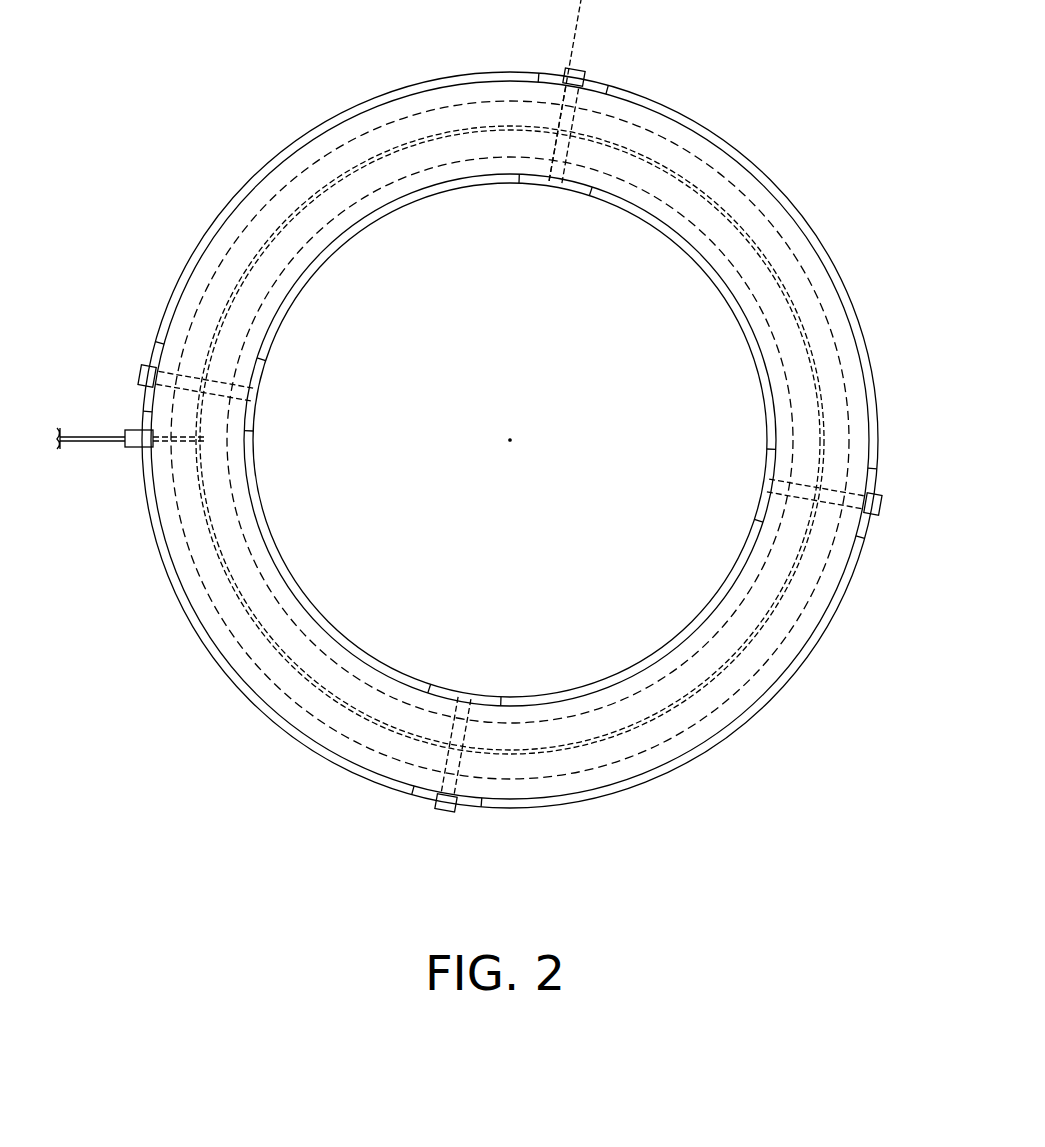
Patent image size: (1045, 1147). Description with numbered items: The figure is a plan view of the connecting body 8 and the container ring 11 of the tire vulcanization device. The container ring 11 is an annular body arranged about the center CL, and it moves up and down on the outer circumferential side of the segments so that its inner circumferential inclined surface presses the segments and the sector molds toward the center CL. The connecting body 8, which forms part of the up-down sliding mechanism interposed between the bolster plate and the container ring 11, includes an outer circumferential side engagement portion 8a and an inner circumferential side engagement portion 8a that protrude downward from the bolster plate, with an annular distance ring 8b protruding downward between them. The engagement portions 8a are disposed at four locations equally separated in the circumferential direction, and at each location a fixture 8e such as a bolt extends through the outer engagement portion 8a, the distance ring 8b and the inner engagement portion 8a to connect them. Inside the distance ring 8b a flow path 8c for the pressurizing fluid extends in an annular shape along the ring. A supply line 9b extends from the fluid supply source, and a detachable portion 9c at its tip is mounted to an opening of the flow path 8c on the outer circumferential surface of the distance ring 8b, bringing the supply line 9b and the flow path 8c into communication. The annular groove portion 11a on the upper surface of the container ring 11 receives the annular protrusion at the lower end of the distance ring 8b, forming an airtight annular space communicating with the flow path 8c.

The connecting body 8 is at (113, 353).
The engagement portion 8a is at (598, 82).
The distance ring 8b is at (268, 312).
The flow path 8c is at (512, 130).
The fixture 8e is at (565, 67).
The supply line 9b is at (72, 450).
The detachable portion 9c is at (134, 450).
The container ring 11 is at (718, 740).
The annular groove portion 11a is at (330, 675).
The center CL is at (510, 439).